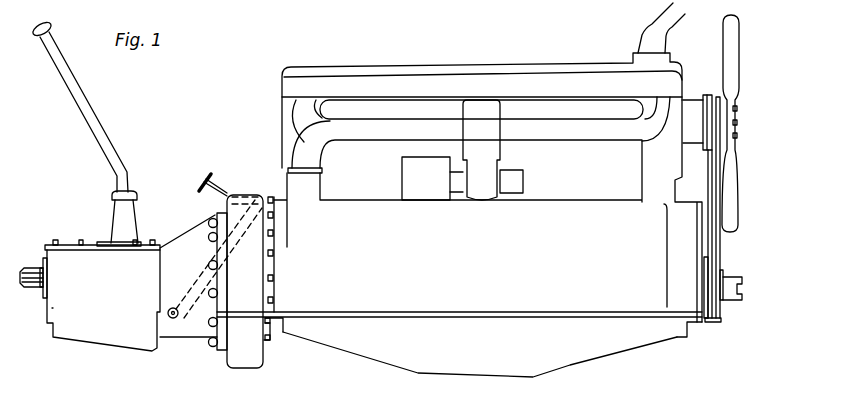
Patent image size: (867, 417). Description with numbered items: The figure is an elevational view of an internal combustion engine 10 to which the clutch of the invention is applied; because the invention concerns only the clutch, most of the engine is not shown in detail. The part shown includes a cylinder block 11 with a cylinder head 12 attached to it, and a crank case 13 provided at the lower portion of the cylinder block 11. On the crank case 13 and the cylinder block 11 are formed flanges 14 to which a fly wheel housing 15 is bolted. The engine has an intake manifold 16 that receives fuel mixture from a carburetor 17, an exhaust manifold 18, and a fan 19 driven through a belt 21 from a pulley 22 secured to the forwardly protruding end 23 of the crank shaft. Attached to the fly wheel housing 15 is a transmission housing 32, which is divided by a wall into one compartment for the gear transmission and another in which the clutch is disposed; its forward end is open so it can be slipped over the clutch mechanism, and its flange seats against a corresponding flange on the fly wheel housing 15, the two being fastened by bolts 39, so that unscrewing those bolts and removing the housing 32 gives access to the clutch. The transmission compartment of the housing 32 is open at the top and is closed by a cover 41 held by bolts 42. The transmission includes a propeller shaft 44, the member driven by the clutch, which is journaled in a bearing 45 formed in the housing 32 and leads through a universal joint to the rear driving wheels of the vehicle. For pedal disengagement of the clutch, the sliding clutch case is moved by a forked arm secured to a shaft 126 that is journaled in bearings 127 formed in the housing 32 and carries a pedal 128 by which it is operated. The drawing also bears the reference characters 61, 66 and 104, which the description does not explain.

The internal combustion engine 10 is at (627, 308).
The cylinder block 11 is at (545, 248).
The cylinder head 12 is at (535, 78).
The crank case 13 is at (557, 350).
The flanges 14 is at (270, 290).
The fly wheel housing 15 is at (243, 217).
The intake manifold 16 is at (380, 107).
The carburetor 17 is at (512, 183).
The exhaust manifold 18 is at (358, 135).
The fan 19 is at (728, 72).
The belt 21 is at (714, 179).
The pulley 22 is at (723, 262).
The forwardly protruding end of the crank shaft 23 is at (732, 292).
The transmission housing 32 is at (117, 330).
The bolts 39 is at (209, 300).
The cover 41 is at (93, 245).
The bolts 42 is at (80, 242).
The propeller shaft 44 is at (22, 268).
The bearing 45 is at (40, 298).
The connecting rod 61 is at (181, 316).
The shaft 66 is at (234, 301).
The shaft 104 is at (222, 404).
The shaft 126 is at (169, 310).
The bearings 127 is at (173, 307).
The pedal 128 is at (205, 178).